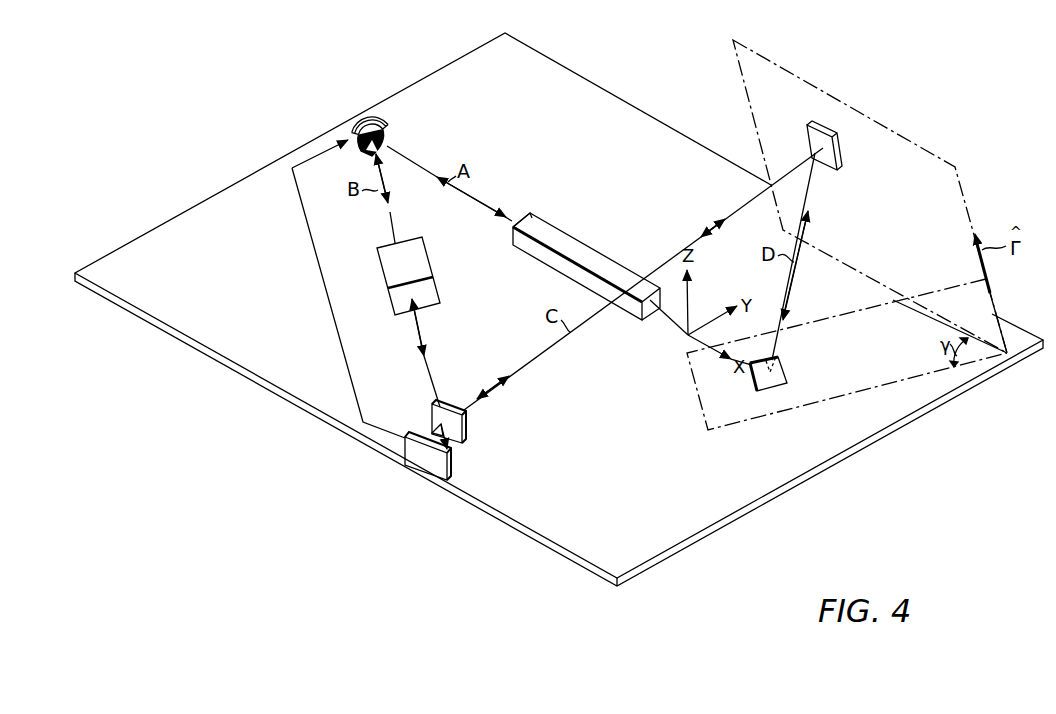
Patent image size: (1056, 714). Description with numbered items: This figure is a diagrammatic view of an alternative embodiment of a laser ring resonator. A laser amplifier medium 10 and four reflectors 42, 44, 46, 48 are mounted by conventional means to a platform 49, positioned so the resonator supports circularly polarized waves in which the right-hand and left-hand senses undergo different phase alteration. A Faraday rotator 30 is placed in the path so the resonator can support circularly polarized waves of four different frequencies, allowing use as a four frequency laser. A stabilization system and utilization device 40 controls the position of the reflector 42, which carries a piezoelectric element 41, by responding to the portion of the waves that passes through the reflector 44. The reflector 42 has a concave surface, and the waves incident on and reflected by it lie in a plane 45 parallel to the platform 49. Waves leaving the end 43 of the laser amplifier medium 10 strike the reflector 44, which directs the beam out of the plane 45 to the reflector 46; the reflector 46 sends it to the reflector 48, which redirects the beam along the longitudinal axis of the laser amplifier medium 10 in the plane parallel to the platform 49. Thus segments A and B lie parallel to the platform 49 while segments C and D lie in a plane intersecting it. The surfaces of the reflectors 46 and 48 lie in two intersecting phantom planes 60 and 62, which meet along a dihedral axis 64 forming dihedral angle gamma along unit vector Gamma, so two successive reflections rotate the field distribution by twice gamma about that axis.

The laser amplifier medium 10 is at (586, 251).
The Faraday rotator 30 is at (432, 267).
The stabilization system and utilization device 40 is at (428, 457).
The piezoelectric element 41 is at (387, 116).
The reflector 42 is at (385, 135).
The end of laser medium 43 is at (522, 224).
The reflector 44 is at (466, 422).
The plane 45 is at (593, 182).
The reflector 46 is at (838, 150).
The reflector 48 is at (787, 362).
The platform 49 is at (585, 79).
The plane 60 is at (703, 423).
The plane 62 is at (925, 150).
The dihedral axis 64 is at (994, 293).